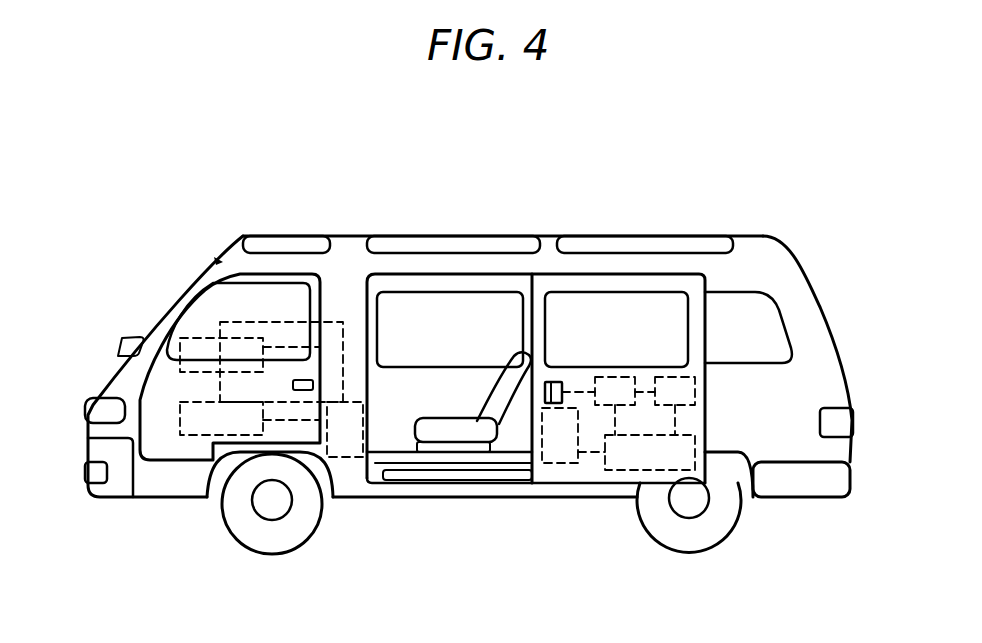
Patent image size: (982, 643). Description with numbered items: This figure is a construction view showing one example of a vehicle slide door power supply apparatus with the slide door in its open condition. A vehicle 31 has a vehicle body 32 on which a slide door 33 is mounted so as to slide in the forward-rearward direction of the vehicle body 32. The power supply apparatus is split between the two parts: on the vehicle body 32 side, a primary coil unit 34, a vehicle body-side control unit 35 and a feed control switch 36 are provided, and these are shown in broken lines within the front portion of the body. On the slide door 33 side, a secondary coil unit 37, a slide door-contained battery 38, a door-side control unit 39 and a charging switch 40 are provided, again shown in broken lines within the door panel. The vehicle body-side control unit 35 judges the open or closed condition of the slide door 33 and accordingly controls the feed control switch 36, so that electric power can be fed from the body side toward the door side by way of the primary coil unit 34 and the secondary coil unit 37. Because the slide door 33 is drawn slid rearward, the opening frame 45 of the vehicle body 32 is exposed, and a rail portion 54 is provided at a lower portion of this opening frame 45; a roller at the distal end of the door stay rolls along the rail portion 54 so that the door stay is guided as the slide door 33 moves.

The vehicle 31 is at (634, 164).
The vehicle body 32 is at (164, 507).
The slide door 33 is at (668, 262).
The primary coil unit 34 is at (344, 440).
The vehicle body-side control unit 35 is at (182, 416).
The feed control switch 36 is at (182, 355).
The secondary coil unit 37 is at (553, 445).
The slide door-contained battery 38 is at (708, 390).
The door-side control unit 39 is at (614, 468).
The charging switch 40 is at (616, 378).
The opening frame 45 is at (372, 286).
The rail portion 54 is at (453, 477).